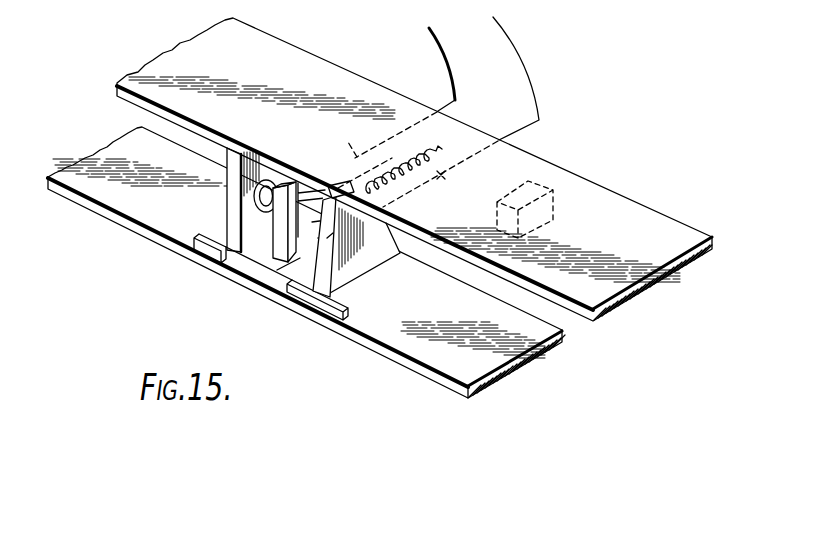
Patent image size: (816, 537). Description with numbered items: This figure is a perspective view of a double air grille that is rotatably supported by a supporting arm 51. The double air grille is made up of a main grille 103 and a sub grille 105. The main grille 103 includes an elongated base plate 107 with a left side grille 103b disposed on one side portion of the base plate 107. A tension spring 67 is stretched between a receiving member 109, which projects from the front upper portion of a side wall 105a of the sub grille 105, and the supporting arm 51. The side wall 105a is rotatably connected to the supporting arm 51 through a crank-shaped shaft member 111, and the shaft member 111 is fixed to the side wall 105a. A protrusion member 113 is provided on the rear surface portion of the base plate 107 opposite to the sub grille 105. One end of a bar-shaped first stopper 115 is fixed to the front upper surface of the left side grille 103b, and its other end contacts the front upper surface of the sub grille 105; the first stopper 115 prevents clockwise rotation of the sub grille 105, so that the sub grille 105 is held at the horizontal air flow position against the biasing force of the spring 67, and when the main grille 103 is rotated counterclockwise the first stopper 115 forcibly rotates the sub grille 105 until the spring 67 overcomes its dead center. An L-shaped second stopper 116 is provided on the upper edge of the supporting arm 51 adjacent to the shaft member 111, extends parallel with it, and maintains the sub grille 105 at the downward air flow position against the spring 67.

The supporting arm 51 is at (512, 84).
The tension spring 67 is at (434, 158).
The main grille 103 is at (107, 233).
The left side grille 103b is at (168, 251).
The sub grille 105 is at (413, 366).
The side wall 105a is at (328, 273).
The elongated base plate 107 is at (317, 82).
The receiving member 109 is at (305, 250).
The crank-shaped shaft member 111 is at (268, 262).
The protrusion member 113 is at (553, 205).
The first stopper 115 is at (277, 252).
The second stopper 116 is at (348, 142).